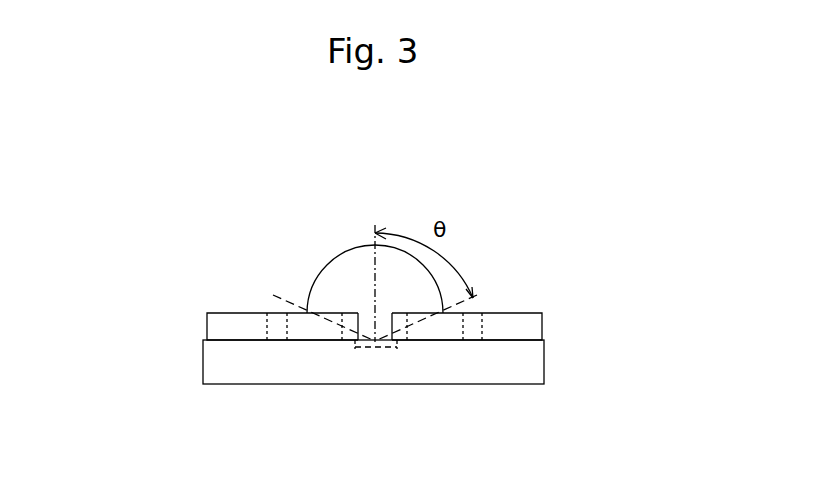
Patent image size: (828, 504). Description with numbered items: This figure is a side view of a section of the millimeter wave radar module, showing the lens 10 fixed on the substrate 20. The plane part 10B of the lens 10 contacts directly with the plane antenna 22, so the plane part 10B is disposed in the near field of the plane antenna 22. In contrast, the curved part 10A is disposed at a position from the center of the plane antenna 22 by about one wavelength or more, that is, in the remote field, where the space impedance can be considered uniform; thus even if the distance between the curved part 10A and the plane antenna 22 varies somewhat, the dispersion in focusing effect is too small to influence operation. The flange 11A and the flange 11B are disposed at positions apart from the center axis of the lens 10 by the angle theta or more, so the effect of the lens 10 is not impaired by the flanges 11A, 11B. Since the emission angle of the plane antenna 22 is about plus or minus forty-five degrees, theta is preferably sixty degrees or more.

The lens 10 is at (340, 297).
The curved part 10A is at (345, 265).
The plane part 10B is at (415, 340).
The flange 11A is at (230, 325).
The flange 11B is at (513, 328).
The substrate 20 is at (239, 384).
The plane antenna 22 is at (388, 348).